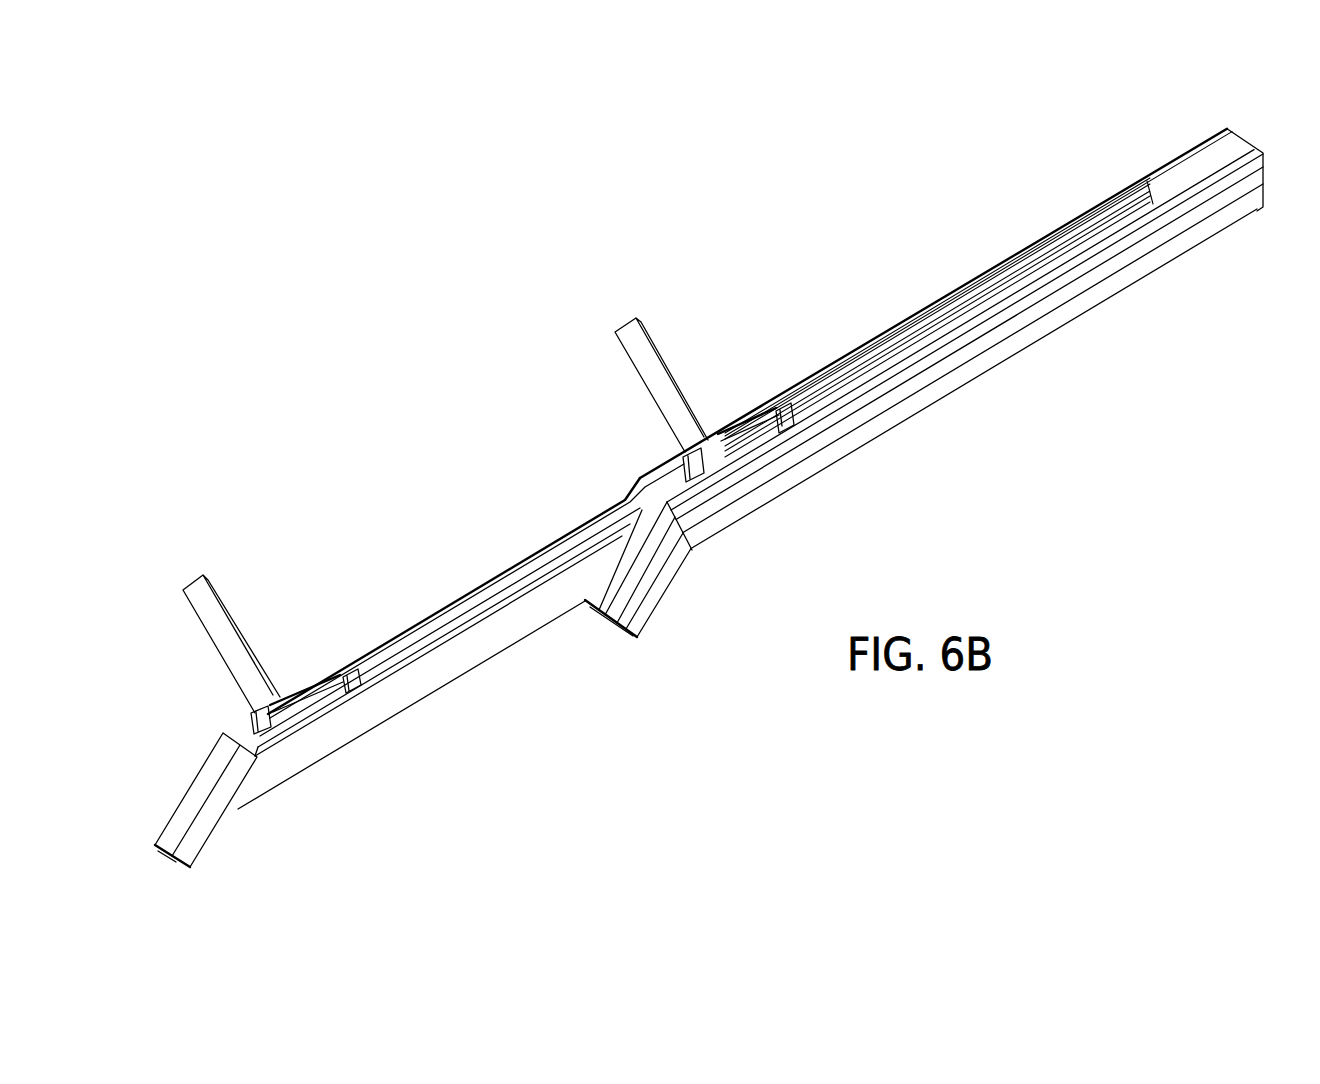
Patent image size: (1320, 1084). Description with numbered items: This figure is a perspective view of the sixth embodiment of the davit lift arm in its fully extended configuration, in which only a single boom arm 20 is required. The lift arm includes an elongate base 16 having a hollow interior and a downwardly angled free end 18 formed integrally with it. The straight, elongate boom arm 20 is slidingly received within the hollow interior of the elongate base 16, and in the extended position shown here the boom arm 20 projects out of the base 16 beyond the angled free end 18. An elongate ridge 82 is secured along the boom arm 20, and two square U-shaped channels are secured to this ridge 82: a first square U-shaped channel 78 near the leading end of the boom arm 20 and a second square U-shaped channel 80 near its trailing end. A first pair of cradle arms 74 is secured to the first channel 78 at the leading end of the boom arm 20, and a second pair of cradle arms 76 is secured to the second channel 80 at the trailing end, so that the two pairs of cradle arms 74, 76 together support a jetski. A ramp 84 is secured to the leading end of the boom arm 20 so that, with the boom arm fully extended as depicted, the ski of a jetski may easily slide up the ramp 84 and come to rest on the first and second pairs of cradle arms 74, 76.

The elongate base 16 is at (980, 377).
The downwardly angled free end 18 is at (657, 617).
The boom arm 20 is at (418, 706).
The first pair of cradle arms 74 is at (224, 608).
The second pair of cradle arms 76 is at (658, 344).
The first square U-shaped channel 78 is at (253, 706).
The second square U-shaped channel 80 is at (689, 449).
The elongate ridge 82 is at (483, 587).
The ramp 84 is at (205, 812).